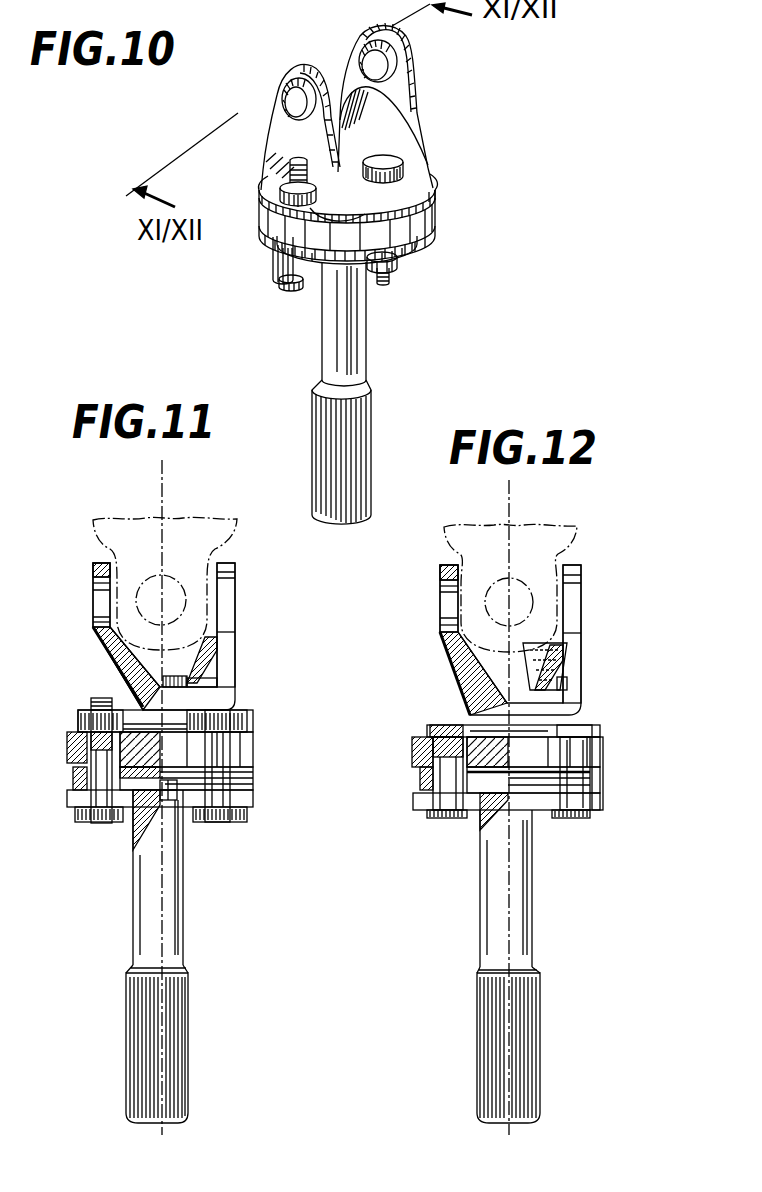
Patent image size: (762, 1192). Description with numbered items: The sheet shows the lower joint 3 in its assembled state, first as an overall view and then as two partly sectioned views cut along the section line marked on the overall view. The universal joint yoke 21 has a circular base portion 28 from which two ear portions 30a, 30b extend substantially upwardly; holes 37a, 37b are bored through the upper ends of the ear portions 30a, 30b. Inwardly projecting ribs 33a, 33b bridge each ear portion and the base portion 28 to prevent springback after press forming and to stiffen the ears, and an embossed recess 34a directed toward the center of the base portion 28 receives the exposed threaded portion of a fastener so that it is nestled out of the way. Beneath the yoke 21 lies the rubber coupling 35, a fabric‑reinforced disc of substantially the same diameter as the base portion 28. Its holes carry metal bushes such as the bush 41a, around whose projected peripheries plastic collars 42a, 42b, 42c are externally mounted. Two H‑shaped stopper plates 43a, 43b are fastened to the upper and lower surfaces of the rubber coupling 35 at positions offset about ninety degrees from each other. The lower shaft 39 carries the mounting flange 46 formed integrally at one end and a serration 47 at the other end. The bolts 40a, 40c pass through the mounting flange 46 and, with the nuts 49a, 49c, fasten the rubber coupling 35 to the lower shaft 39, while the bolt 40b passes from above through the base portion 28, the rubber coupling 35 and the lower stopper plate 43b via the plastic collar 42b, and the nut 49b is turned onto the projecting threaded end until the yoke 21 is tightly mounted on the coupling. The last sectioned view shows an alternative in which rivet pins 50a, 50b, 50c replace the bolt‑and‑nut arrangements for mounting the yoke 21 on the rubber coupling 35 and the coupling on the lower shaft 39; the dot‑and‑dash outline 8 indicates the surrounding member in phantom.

In FIG. 10, the lower joint 3 is at (262, 318).
In FIG. 11, the cylinder body 8 is at (237, 527).
In FIG. 12, the cylinder body 8 is at (572, 530).
In FIG. 10, the universal joint yoke 21 is at (436, 107).
In FIG. 11, the universal joint yoke 21 is at (246, 626).
In FIG. 12, the universal joint yoke 21 is at (596, 638).
In FIG. 11, the base portion 28 is at (217, 681).
In FIG. 12, the base portion 28 is at (567, 686).
In FIG. 10, the ear portion 30a is at (285, 116).
In FIG. 11, the ear portion 30a is at (97, 563).
In FIG. 12, the ear portion 30a is at (442, 570).
In FIG. 10, the ear portion 30b is at (412, 72).
In FIG. 11, the ear portion 30b is at (233, 572).
In FIG. 12, the ear portion 30b is at (583, 585).
In FIG. 11, the rib 33a is at (100, 618).
In FIG. 12, the rib 33a is at (445, 622).
In FIG. 10, the rib 33b is at (388, 142).
In FIG. 11, the rib 33b is at (226, 626).
In FIG. 12, the rib 33b is at (571, 640).
In FIG. 10, the recess 34a is at (277, 155).
In FIG. 11, the recess 34a is at (103, 666).
In FIG. 12, the recess 34a is at (452, 672).
In FIG. 10, the rubber coupling 35 is at (432, 218).
In FIG. 11, the rubber coupling 35 is at (255, 752).
In FIG. 12, the rubber coupling 35 is at (603, 754).
In FIG. 10, the hole 37a is at (284, 84).
In FIG. 11, the hole 37a is at (100, 575).
In FIG. 12, the hole 37a is at (442, 588).
In FIG. 10, the hole 37b is at (360, 56).
In FIG. 10, the lower shaft 39 is at (368, 331).
In FIG. 11, the lower shaft 39 is at (185, 907).
In FIG. 12, the lower shaft 39 is at (535, 895).
In FIG. 10, the bolt 40a is at (284, 277).
In FIG. 11, the bolt 40a is at (80, 823).
In FIG. 10, the bolt 40b is at (400, 158).
In FIG. 11, the bolt 40b is at (190, 679).
In FIG. 11, the bolt 40c is at (240, 823).
In FIG. 11, the metal bush 41a is at (68, 741).
In FIG. 12, the metal bush 41a is at (413, 749).
In FIG. 10, the plastic collar 42a is at (271, 250).
In FIG. 11, the plastic collar 42a is at (74, 777).
In FIG. 12, the plastic collar 42a is at (421, 778).
In FIG. 10, the plastic collar 42b is at (435, 194).
In FIG. 10, the plastic collar 42c is at (347, 250).
In FIG. 11, the plastic collar 42c is at (256, 797).
In FIG. 12, the plastic collar 42c is at (603, 800).
In FIG. 10, the stopper plate 43a is at (280, 172).
In FIG. 11, the stopper plate 43a is at (254, 727).
In FIG. 12, the stopper plate 43a is at (600, 733).
In FIG. 10, the stopper plate 43b is at (430, 241).
In FIG. 11, the stopper plate 43b is at (256, 775).
In FIG. 12, the stopper plate 43b is at (603, 779).
In FIG. 10, the mounting flange 46 is at (278, 272).
In FIG. 11, the mounting flange 46 is at (254, 806).
In FIG. 12, the mounting flange 46 is at (600, 812).
In FIG. 10, the serration 47 is at (373, 452).
In FIG. 11, the serration 47 is at (188, 1030).
In FIG. 12, the serration 47 is at (542, 1038).
In FIG. 10, the nut 49a is at (268, 226).
In FIG. 11, the nut 49a is at (90, 712).
In FIG. 10, the nut 49b is at (397, 262).
In FIG. 11, the nut 49b is at (180, 800).
In FIG. 11, the nut 49c is at (246, 716).
In FIG. 12, the rivet pin 50a is at (440, 724).
In FIG. 12, the rivet pin 50b is at (562, 690).
In FIG. 12, the rivet pin 50c is at (588, 725).